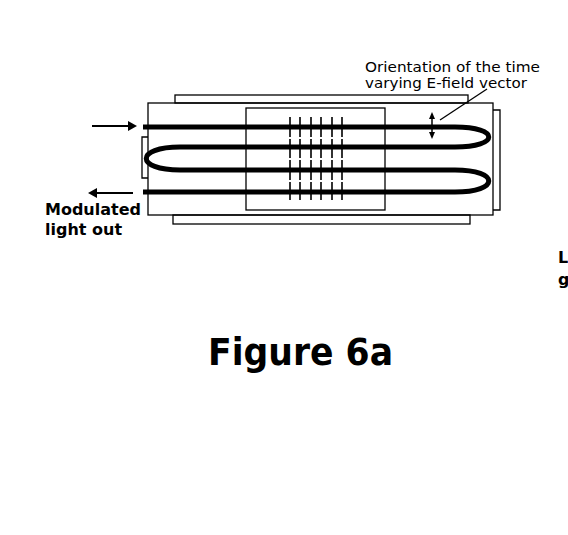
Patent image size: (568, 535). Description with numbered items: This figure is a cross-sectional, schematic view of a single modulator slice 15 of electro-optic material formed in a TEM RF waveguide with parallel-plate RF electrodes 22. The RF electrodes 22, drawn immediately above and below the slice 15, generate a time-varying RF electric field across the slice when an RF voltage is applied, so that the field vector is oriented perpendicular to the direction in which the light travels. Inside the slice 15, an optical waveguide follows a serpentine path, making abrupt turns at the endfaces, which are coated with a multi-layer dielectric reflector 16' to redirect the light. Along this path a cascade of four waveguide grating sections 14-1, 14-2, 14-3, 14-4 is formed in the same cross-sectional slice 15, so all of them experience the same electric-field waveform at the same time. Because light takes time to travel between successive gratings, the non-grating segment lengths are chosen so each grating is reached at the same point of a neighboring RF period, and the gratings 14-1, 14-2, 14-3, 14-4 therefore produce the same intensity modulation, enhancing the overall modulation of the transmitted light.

The modulator slice 15 is at (327, 78).
The RF electrode 22 is at (502, 231).
The multi-layer dielectric reflector 16' is at (326, 160).
The waveguide grating section 14-1 is at (308, 133).
The waveguide grating section 14-2 is at (320, 153).
The waveguide grating section 14-3 is at (322, 177).
The waveguide grating section 14-4 is at (337, 197).